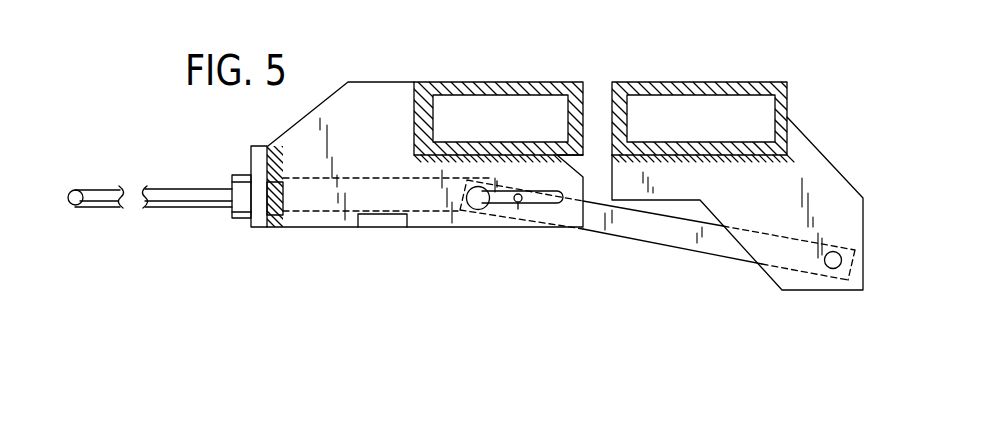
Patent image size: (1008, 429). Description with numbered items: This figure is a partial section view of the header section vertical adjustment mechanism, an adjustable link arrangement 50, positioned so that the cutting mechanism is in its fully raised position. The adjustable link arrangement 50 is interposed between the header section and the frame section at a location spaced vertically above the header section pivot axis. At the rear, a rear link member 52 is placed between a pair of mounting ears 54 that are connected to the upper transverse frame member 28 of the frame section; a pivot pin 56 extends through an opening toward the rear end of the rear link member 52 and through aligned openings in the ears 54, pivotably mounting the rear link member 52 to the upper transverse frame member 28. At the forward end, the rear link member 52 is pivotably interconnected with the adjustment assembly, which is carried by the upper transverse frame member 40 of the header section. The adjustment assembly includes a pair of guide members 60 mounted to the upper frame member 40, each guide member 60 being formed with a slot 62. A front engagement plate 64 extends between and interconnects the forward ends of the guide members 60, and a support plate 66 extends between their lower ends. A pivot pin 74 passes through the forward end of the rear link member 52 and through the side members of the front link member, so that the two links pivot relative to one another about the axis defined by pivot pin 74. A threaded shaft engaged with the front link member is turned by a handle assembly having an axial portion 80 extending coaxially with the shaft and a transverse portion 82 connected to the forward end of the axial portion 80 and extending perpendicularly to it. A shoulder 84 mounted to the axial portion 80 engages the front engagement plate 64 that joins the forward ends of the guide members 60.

The upper transverse frame member 28 is at (702, 81).
The upper transverse frame member 40 is at (507, 81).
The adjustable link arrangement 50 is at (549, 298).
The rear link member 52 is at (665, 248).
The mounting ears 54 is at (828, 158).
The pivot pin 56 is at (822, 270).
The guide members 60 is at (386, 81).
The slot 62 is at (517, 203).
The front engagement plate 64 is at (250, 167).
The support plate 66 is at (410, 223).
The pivot pin 74 is at (480, 209).
The axial portion 80 is at (193, 207).
The transverse portion 82 is at (64, 201).
The shoulder 84 is at (242, 220).